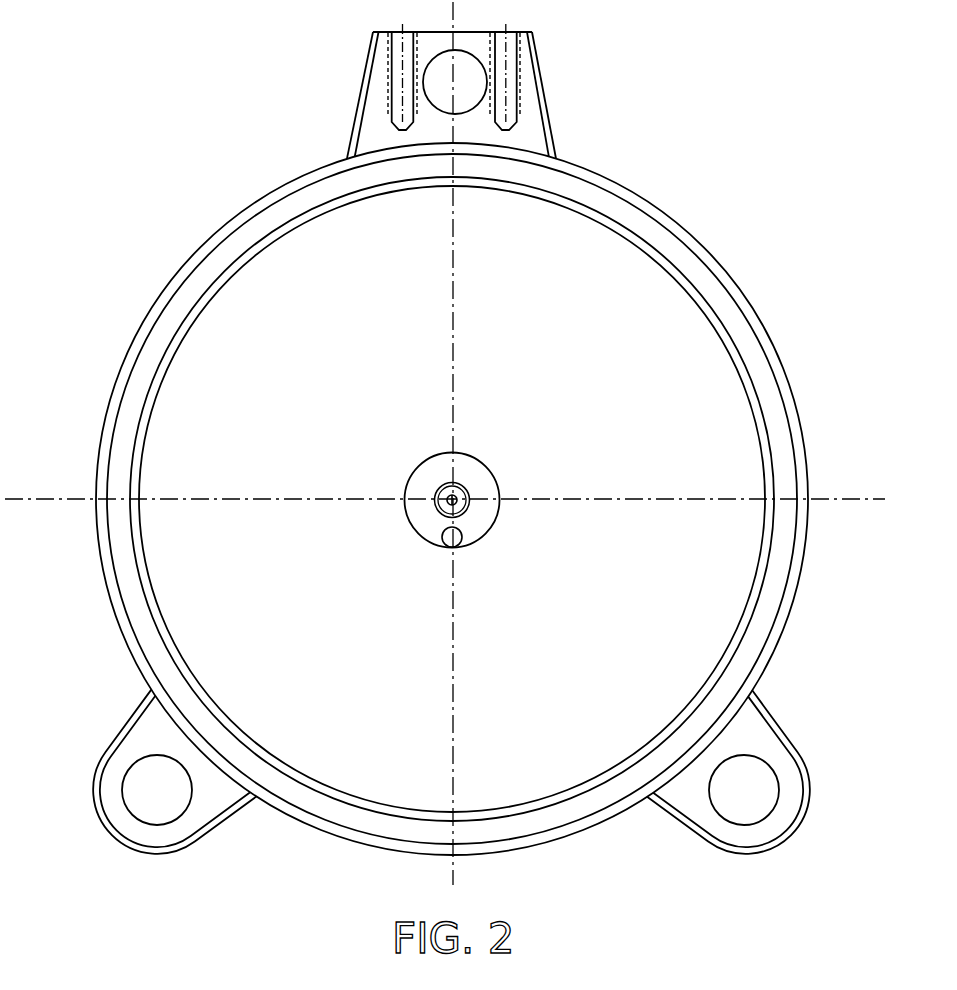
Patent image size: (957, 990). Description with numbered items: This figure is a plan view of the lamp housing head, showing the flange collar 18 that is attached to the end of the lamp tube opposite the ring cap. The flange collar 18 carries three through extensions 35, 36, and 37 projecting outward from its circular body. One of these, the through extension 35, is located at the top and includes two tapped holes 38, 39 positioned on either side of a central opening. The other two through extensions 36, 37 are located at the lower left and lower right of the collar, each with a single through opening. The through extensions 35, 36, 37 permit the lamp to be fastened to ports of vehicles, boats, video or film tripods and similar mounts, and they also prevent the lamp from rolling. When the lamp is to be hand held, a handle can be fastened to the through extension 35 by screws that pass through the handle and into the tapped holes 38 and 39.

The flange collar 18 is at (126, 304).
The through extension 35 is at (538, 141).
The through extension 36 is at (138, 742).
The through extension 37 is at (750, 740).
The tapped hole 38 is at (398, 70).
The tapped hole 39 is at (508, 62).